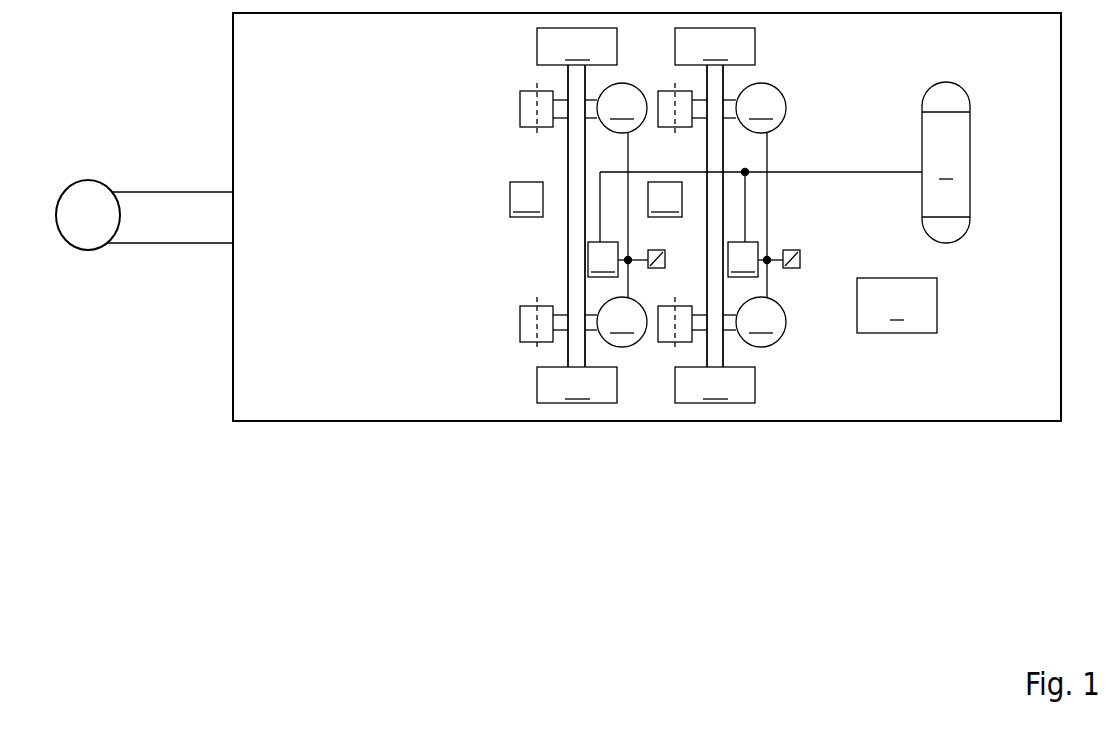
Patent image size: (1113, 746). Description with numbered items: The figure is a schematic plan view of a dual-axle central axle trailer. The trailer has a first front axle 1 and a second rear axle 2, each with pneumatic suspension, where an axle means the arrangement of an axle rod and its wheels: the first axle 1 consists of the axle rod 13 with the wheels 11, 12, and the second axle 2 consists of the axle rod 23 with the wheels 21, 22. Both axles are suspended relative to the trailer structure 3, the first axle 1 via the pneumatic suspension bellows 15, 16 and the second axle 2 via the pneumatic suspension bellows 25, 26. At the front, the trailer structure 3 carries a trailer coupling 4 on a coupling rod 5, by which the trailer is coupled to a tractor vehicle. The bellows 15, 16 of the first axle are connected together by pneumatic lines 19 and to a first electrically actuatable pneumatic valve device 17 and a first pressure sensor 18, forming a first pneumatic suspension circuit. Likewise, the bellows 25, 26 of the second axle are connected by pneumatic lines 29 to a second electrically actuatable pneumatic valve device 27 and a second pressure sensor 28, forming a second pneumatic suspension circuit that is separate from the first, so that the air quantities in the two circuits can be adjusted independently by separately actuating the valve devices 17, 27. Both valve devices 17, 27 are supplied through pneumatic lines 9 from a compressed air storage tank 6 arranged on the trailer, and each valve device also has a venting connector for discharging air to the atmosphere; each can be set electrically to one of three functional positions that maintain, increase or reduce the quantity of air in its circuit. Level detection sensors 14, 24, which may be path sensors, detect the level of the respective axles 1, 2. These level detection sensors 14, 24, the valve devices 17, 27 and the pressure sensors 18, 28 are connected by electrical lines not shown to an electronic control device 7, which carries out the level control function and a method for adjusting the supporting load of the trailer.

The first front axle 1 is at (575, 438).
The second rear axle 2 is at (721, 438).
The trailer structure 3 is at (373, 421).
The trailer coupling 4 is at (80, 249).
The coupling rod 5 is at (152, 244).
The compressed air storage tank 6 is at (946, 162).
The electronic control device 7 is at (897, 305).
The pneumatic lines 9 is at (848, 172).
The wheel 11 is at (568, 82).
The wheel 12 is at (568, 350).
The axle rod 13 is at (567, 277).
The level detection sensor 14 is at (570, 190).
The pneumatic suspension bellows 15 is at (616, 108).
The pneumatic suspension bellows 16 is at (616, 322).
The first electrically actuatable pneumatic valve device 17 is at (603, 224).
The first pressure sensor 18 is at (665, 253).
The pneumatic lines 19 is at (630, 228).
The wheel 21 is at (706, 82).
The wheel 22 is at (706, 350).
The axle rod 23 is at (710, 280).
The level detection sensor 24 is at (708, 190).
The pneumatic suspension bellows 25 is at (754, 108).
The pneumatic suspension bellows 26 is at (754, 322).
The second electrically actuatable pneumatic valve device 27 is at (743, 223).
The second pressure sensor 28 is at (800, 252).
The pneumatic lines 29 is at (769, 212).